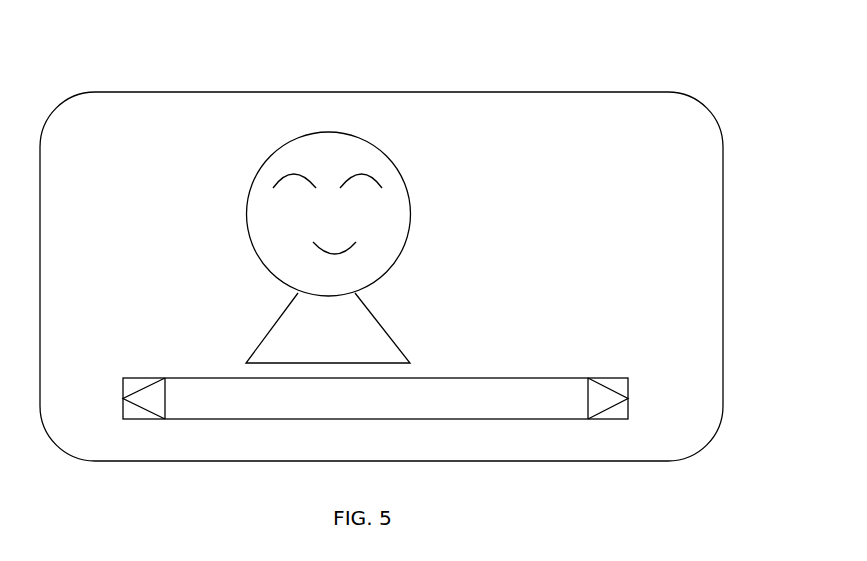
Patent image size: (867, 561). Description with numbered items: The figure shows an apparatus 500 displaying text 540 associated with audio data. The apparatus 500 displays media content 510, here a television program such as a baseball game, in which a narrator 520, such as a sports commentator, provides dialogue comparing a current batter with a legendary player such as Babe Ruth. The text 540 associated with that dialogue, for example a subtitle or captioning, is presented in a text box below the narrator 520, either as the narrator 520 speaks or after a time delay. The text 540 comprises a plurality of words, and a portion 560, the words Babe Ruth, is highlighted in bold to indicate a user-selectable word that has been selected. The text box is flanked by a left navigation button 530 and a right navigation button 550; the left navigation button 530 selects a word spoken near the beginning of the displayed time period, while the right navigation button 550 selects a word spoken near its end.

The apparatus 500 is at (398, 42).
The media content 510 is at (582, 92).
The narrator 520 is at (410, 188).
The left navigation button 530 is at (137, 392).
The text 540 is at (396, 407).
The right navigation button 550 is at (590, 383).
The portion 560 is at (222, 412).